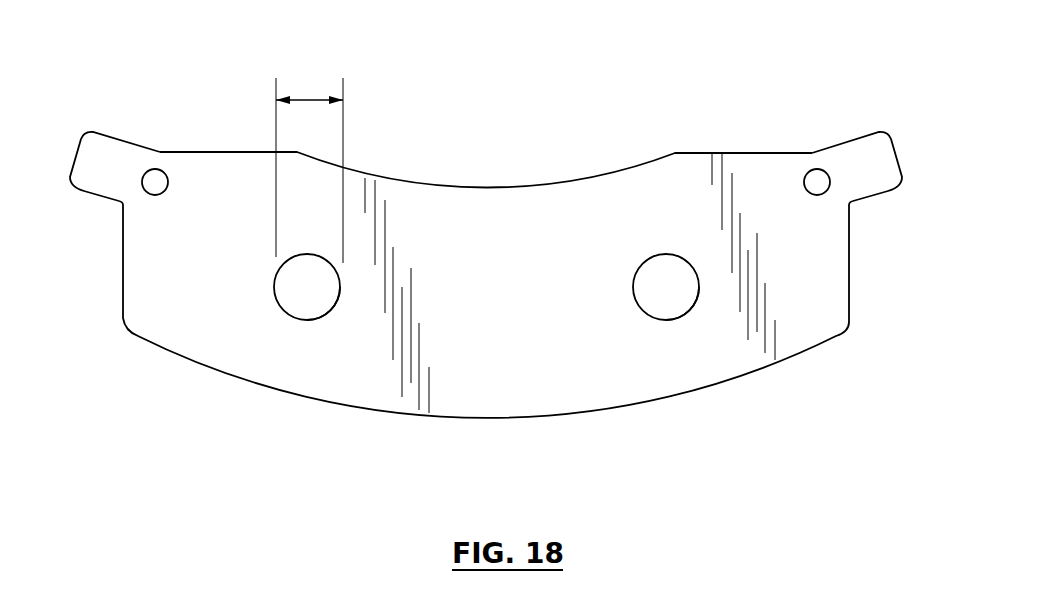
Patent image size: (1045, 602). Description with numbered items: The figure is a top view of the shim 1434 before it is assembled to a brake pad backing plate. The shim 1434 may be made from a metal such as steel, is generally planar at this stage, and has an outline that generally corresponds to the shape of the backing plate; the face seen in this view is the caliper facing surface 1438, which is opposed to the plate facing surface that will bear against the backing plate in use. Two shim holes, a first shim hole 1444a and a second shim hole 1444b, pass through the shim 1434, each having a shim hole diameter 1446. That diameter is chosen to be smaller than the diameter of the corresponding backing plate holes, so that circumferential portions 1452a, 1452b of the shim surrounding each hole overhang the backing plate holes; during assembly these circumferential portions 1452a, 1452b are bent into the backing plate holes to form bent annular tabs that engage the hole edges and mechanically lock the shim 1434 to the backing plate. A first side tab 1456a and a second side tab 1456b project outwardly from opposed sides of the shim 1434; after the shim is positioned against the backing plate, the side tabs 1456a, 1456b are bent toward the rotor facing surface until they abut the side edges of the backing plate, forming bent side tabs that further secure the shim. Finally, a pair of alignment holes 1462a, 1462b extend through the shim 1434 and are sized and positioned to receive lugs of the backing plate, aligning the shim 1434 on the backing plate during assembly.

The shim 1434 is at (615, 103).
The caliper facing surface 1438 is at (807, 310).
The first shim hole 1444a is at (310, 293).
The second shim hole 1444b is at (662, 293).
The shim hole diameter 1446 is at (307, 100).
The circumferential portion 1452a is at (345, 335).
The circumferential portion 1452b is at (686, 330).
The first side tab 1456a is at (87, 177).
The second side tab 1456b is at (885, 177).
The alignment hole 1462a is at (153, 168).
The alignment hole 1462b is at (832, 178).